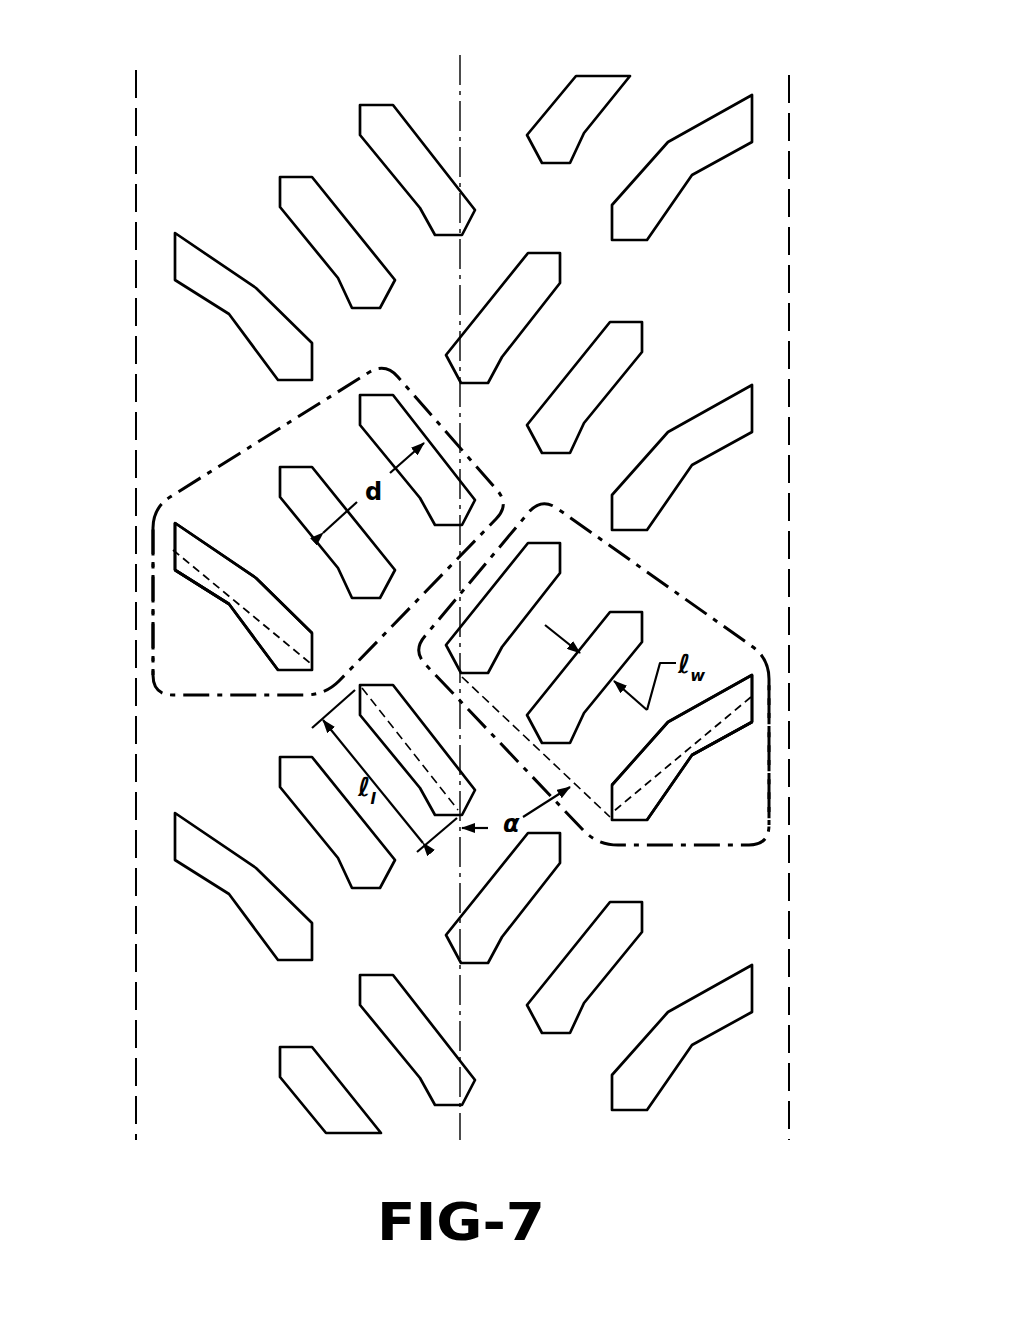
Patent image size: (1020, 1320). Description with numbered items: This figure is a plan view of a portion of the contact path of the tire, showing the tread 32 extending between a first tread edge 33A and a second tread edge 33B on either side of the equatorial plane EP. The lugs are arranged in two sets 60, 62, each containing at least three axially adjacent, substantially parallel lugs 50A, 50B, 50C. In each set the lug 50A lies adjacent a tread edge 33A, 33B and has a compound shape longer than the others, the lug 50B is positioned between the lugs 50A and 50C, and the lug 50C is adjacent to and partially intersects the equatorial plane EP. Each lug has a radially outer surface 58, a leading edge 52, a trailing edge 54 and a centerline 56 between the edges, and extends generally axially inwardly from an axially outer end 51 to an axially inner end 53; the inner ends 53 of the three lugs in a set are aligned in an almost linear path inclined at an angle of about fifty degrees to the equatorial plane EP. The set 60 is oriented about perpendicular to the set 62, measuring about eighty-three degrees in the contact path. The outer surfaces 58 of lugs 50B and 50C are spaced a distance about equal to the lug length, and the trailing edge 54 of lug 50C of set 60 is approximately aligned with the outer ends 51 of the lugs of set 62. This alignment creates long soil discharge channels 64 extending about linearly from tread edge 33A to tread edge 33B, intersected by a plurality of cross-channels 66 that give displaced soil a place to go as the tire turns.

The tread 32 is at (716, 937).
The first tread edge 33A is at (790, 106).
The second tread edge 33B is at (137, 98).
The equatorial plane EP is at (462, 582).
The lug adjacent tread edge 50A is at (212, 535).
The intermediate lug 50B is at (303, 493).
The inner lug 50C is at (392, 408).
The axially outer end 51 is at (173, 541).
The leading edge 52 is at (263, 644).
The axially inner end 53 is at (313, 698).
The trailing edge 54 is at (266, 580).
The centerline 56 is at (212, 582).
The radially outer surface 58 is at (237, 608).
The first set of lugs 60 is at (769, 773).
The second set of lugs 62 is at (153, 619).
The soil discharge channel 64 is at (259, 246).
The cross-channel 66 is at (352, 178).